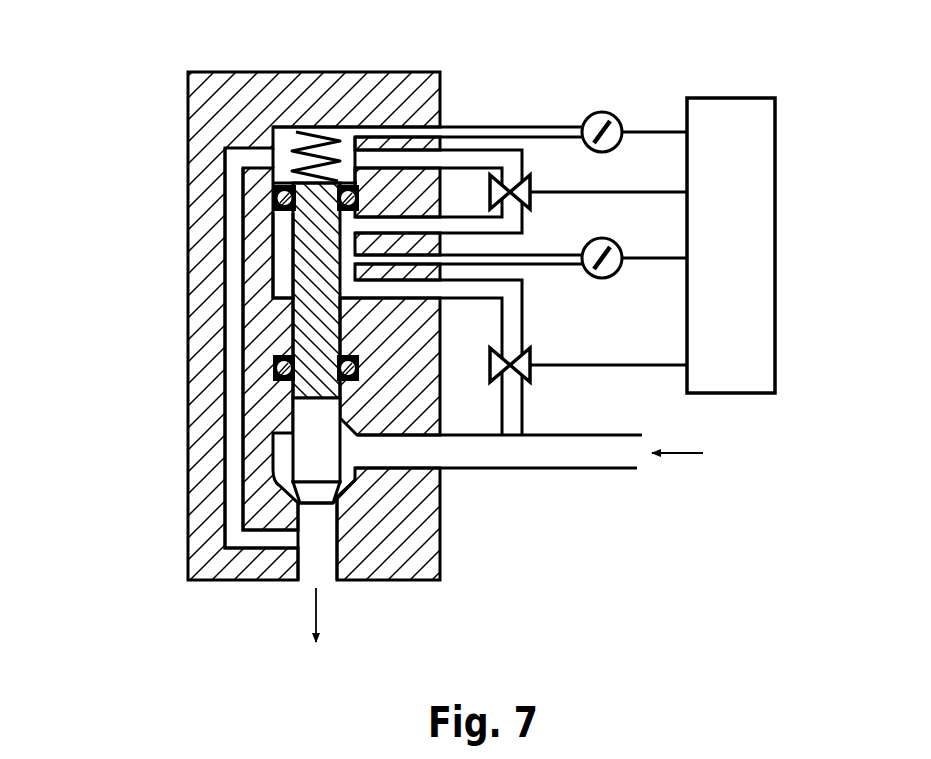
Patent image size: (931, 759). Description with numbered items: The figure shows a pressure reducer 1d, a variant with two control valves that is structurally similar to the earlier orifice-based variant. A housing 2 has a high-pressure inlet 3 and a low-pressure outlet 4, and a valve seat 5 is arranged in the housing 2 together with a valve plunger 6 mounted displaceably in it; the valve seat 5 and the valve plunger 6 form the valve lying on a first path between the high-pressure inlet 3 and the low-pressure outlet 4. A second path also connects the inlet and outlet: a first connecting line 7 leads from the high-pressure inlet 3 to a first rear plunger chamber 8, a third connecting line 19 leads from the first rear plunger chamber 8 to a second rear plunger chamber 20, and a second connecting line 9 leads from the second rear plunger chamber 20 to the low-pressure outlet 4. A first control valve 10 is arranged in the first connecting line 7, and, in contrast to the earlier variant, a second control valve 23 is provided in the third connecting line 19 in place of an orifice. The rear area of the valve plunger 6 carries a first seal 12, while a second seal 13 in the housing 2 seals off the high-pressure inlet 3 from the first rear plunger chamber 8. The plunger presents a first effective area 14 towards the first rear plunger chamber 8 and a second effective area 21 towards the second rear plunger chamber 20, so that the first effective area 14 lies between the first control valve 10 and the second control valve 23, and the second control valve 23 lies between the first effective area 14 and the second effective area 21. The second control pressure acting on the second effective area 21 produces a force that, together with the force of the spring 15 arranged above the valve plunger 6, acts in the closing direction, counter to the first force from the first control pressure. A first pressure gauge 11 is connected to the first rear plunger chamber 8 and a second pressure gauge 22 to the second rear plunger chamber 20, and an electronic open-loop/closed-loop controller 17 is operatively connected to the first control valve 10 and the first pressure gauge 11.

The pressure reducer 1d is at (148, 45).
The housing 2 is at (188, 103).
The high-pressure inlet 3 is at (640, 462).
The low-pressure outlet 4 is at (322, 587).
The valve seat 5 is at (343, 510).
The valve plunger 6 is at (293, 345).
The first connecting line 7 is at (510, 423).
The first rear plunger chamber 8 is at (285, 263).
The second connecting line 9 is at (230, 510).
The first control valve 10 is at (510, 355).
The first pressure gauge 11 is at (605, 242).
The first seal 12 is at (286, 212).
The second seal 13 is at (273, 367).
The first effective area 14 is at (278, 217).
The spring 15 is at (307, 137).
The electronic open-loop/closed-loop controller 17 is at (762, 125).
The third connecting line 19 is at (413, 163).
The second rear plunger chamber 20 is at (344, 137).
The second effective area 21 is at (281, 186).
The second pressure gauge 22 is at (607, 113).
The second control valve 23 is at (519, 181).